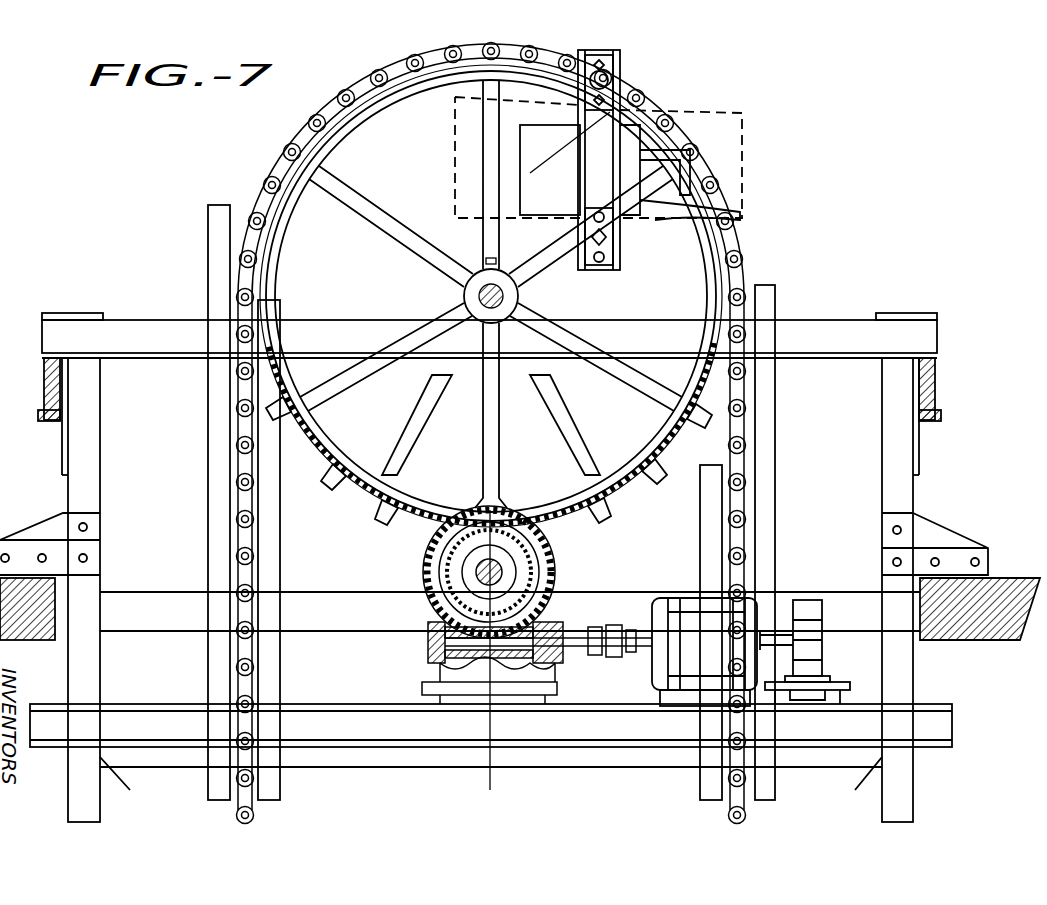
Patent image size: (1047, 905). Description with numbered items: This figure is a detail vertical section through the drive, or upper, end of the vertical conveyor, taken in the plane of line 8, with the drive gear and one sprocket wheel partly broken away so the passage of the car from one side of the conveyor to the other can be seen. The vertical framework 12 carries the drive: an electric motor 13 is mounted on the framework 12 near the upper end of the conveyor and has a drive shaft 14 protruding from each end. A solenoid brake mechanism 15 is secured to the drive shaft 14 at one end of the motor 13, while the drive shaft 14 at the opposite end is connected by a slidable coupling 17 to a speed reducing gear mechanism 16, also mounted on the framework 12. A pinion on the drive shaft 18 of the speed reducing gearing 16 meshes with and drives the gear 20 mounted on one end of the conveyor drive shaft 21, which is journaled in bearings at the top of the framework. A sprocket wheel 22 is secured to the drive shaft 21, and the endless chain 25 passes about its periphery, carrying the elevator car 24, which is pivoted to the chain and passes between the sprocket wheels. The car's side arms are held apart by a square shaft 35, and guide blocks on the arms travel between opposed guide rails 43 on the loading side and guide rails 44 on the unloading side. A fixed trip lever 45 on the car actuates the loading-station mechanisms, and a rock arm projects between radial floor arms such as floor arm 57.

The section line 8 is at (599, 50).
The vertical framework 12 is at (135, 345).
The electric motor 13 is at (688, 602).
The drive shaft 14 is at (632, 650).
The solenoid brake mechanism 15 is at (805, 602).
The speed reducing gear mechanism 16 is at (432, 575).
The slidable coupling 17 is at (606, 655).
The drive shaft of the speed reducing gearing 18 is at (520, 575).
The gear 20 is at (410, 445).
The conveyor drive shaft 21 is at (482, 280).
The sprocket wheel 22 is at (318, 170).
The elevator car 24 is at (620, 235).
The endless chain 25 is at (275, 170).
The square shaft 35 is at (598, 248).
The guide rails 43 is at (760, 515).
The guide rails 44 is at (258, 545).
The fixed trip lever 45 is at (528, 152).
The radial floor arm 57 is at (665, 200).